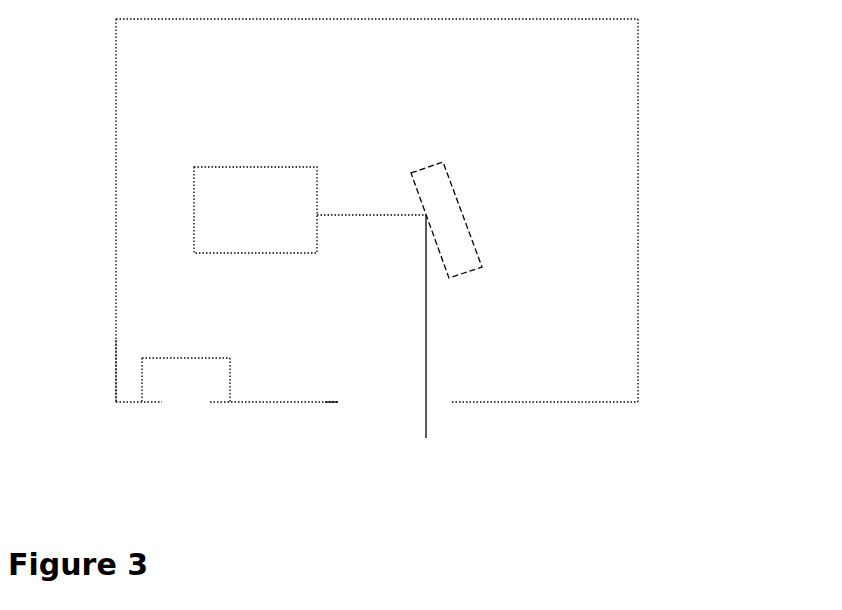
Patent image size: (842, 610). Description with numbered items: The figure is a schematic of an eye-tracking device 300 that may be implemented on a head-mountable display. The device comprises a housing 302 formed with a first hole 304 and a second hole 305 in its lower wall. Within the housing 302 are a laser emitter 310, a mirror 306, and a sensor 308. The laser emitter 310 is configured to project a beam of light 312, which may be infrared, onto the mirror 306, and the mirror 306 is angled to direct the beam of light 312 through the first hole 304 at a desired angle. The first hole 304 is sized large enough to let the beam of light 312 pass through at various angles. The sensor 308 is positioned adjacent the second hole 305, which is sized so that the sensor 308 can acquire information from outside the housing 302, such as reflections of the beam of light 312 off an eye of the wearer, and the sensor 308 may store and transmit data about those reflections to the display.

The eye-tracking device 300 is at (709, 403).
The housing 302 is at (638, 297).
The first hole 304 is at (370, 392).
The second hole 305 is at (186, 385).
The mirror 306 is at (453, 185).
The sensor 308 is at (168, 385).
The laser emitter 310 is at (220, 210).
The beam of light 312 is at (426, 420).